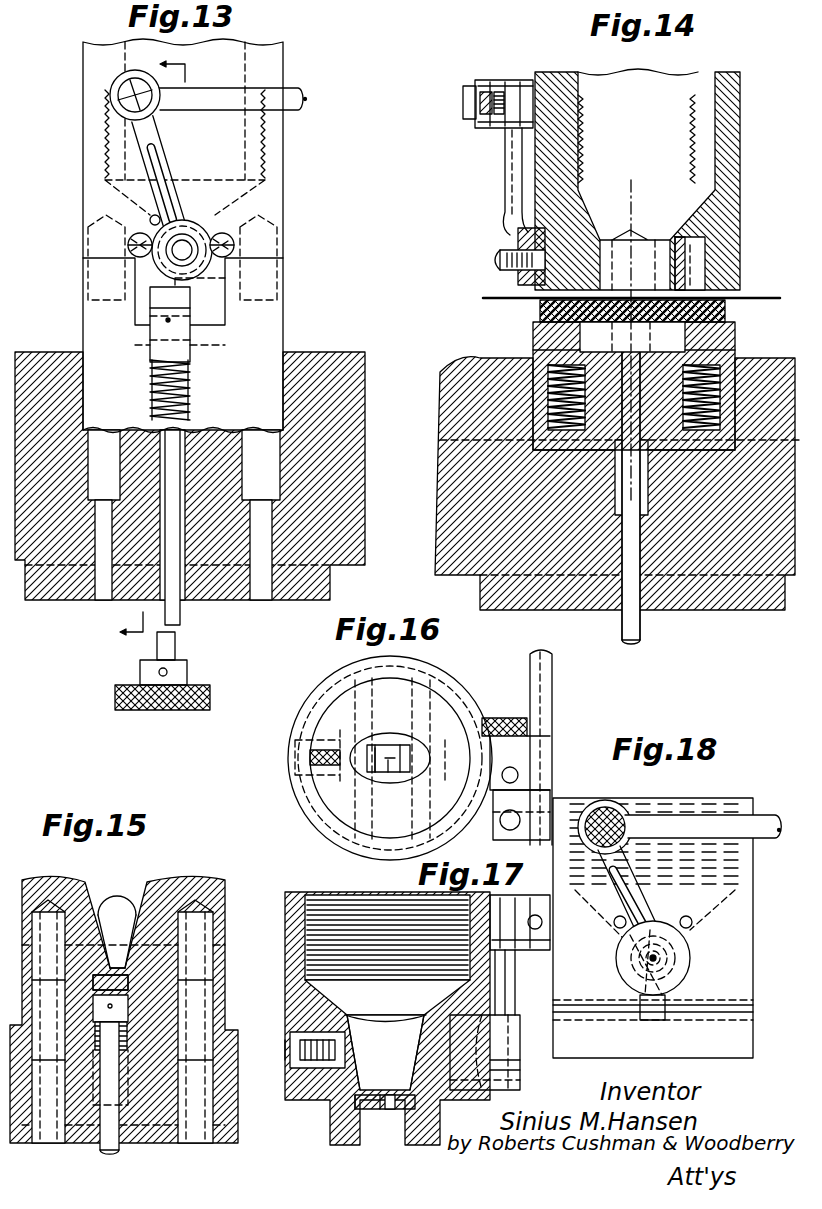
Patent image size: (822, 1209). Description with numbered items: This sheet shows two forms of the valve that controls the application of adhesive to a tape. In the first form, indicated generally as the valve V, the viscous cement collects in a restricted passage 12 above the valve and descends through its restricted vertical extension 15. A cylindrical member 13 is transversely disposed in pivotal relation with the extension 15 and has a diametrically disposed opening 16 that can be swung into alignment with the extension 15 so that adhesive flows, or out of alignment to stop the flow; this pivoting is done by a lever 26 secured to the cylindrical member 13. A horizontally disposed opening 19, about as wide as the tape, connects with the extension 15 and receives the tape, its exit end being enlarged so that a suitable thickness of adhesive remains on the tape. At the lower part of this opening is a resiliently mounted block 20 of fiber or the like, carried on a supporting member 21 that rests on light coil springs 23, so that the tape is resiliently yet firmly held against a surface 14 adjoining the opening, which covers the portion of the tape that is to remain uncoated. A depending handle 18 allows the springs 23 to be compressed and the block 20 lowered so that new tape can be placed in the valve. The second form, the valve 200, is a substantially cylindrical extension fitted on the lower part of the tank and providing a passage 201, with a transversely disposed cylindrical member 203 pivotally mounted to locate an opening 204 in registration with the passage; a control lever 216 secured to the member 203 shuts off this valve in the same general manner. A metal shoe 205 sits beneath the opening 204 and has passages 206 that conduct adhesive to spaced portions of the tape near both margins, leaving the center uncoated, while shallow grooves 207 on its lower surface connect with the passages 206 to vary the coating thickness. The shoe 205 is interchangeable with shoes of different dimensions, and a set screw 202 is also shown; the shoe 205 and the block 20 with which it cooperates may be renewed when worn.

In FIG. 13, the restricted passage 12 is at (243, 74).
In FIG. 13, the cylindrical member 13 is at (205, 262).
In FIG. 14, the cylindrical member 13 is at (700, 250).
In FIG. 15, the cylindrical member 13 is at (150, 936).
In FIG. 13, the surface 14 is at (149, 342).
In FIG. 14, the vertical extension of passage 15 is at (648, 201).
In FIG. 15, the vertical extension of passage 15 is at (125, 965).
In FIG. 13, the diametrically disposed opening 16 is at (212, 270).
In FIG. 14, the diametrically disposed opening 16 is at (662, 245).
In FIG. 15, the diametrically disposed opening 16 is at (132, 920).
In FIG. 13, the depending handle 18 is at (178, 622).
In FIG. 14, the depending handle 18 is at (645, 632).
In FIG. 15, the depending handle 18 is at (106, 1142).
In FIG. 14, the horizontally disposed opening 19 is at (740, 296).
In FIG. 13, the resiliently mounted block 20 is at (150, 300).
In FIG. 14, the resiliently mounted block 20 is at (730, 316).
In FIG. 15, the resiliently mounted block 20 is at (130, 992).
In FIG. 13, the supporting member 21 is at (180, 330).
In FIG. 14, the supporting member 21 is at (533, 340).
In FIG. 13, the coil springs 23 is at (188, 375).
In FIG. 14, the coil springs 23 is at (710, 388).
In FIG. 13, the lever 26 is at (160, 150).
In FIG. 14, the lever 26 is at (507, 160).
In FIG. 16, the valve 200 is at (448, 692).
In FIG. 16, the passage 201 is at (412, 752).
In FIG. 17, the passage 201 is at (345, 985).
In FIG. 18, the passage 201 is at (660, 1010).
In FIG. 17, the set screw 202 is at (315, 1050).
In FIG. 16, the cylindrical member 203 is at (518, 750).
In FIG. 17, the cylindrical member 203 is at (522, 1052).
In FIG. 18, the cylindrical member 203 is at (690, 958).
In FIG. 16, the opening 204 is at (412, 766).
In FIG. 17, the opening 204 is at (362, 1062).
In FIG. 18, the opening 204 is at (625, 958).
In FIG. 16, the shoe 205 is at (388, 768).
In FIG. 17, the shoe 205 is at (385, 1112).
In FIG. 16, the passages 206 is at (398, 772).
In FIG. 17, the passages 206 is at (418, 1102).
In FIG. 16, the grooves 207 is at (378, 770).
In FIG. 17, the grooves 207 is at (370, 1115).
In FIG. 16, the control lever 216 is at (552, 680).
In FIG. 17, the control lever 216 is at (512, 962).
In FIG. 18, the control lever 216 is at (636, 902).
In FIG. 15, the valve V is at (234, 903).